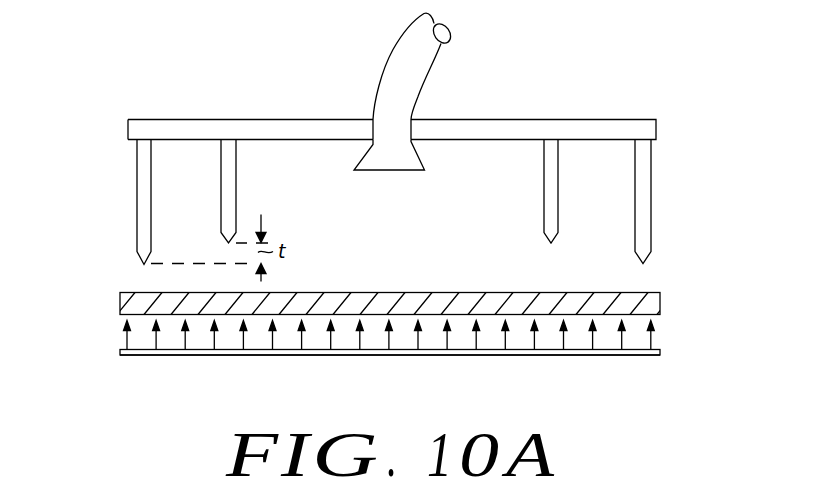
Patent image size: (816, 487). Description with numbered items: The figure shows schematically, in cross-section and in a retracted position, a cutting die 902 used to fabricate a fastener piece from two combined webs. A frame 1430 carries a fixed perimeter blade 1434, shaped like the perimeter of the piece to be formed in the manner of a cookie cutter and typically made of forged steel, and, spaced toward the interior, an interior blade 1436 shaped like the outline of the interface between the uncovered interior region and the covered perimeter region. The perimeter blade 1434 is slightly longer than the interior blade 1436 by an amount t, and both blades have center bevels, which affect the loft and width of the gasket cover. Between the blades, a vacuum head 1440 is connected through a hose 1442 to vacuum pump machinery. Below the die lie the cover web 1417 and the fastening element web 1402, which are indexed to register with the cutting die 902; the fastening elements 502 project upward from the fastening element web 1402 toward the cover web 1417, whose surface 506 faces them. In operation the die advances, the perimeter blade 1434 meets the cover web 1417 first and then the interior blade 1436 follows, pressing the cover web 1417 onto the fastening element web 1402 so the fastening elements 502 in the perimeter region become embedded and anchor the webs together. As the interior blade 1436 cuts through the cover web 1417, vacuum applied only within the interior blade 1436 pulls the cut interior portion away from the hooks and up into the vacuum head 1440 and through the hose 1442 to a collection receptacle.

The cutting die 902 is at (115, 182).
The frame 1430 is at (277, 118).
The perimeter blade 1434 is at (138, 222).
The interior blade 1436 is at (229, 192).
The vacuum head 1440 is at (370, 150).
The hose 1442 is at (412, 33).
The cover web 1417 is at (118, 300).
The fastening element web 1402 is at (119, 353).
The fastening elements 502 is at (443, 338).
The substrate surface 506 is at (567, 352).